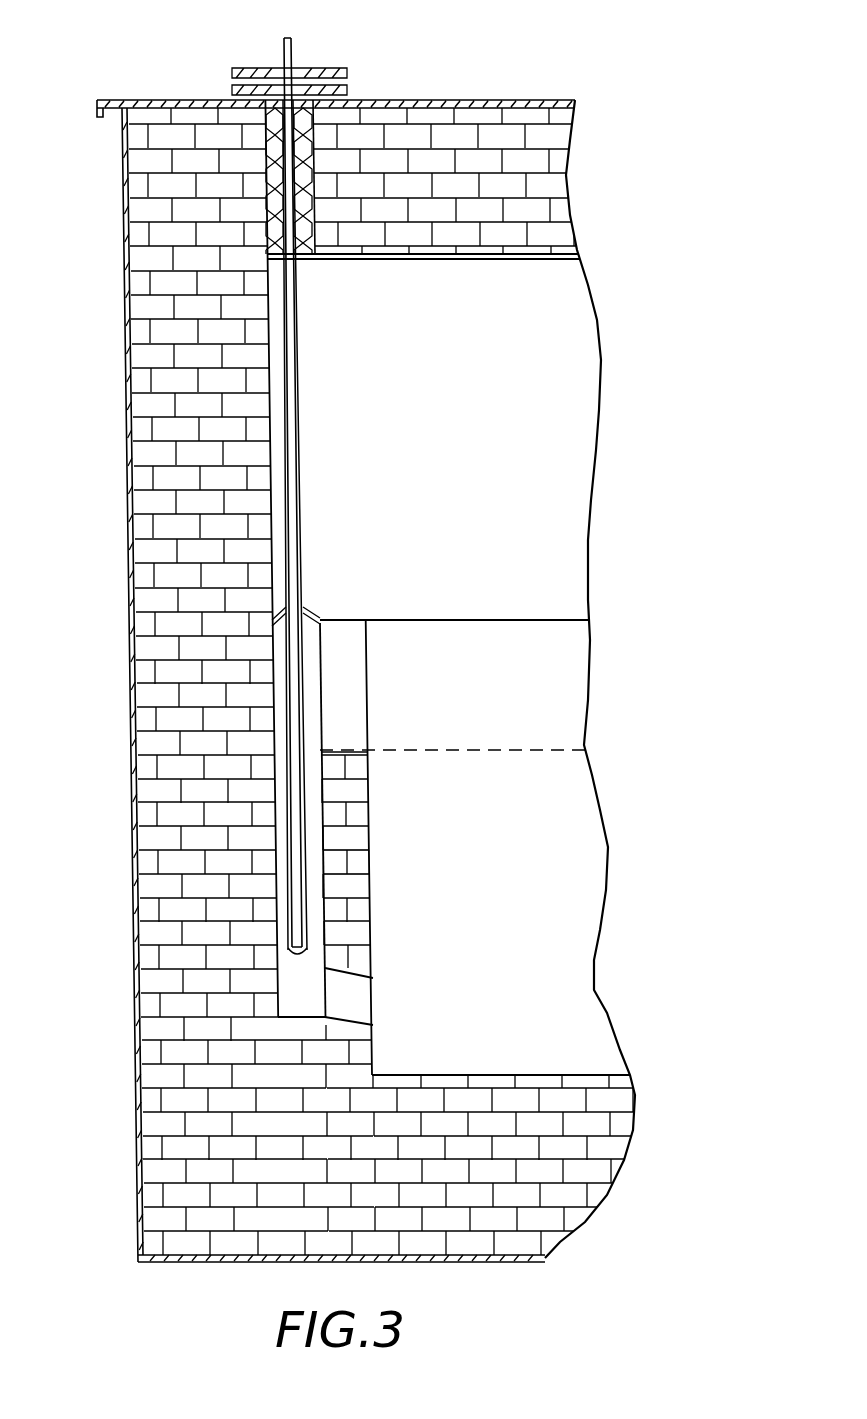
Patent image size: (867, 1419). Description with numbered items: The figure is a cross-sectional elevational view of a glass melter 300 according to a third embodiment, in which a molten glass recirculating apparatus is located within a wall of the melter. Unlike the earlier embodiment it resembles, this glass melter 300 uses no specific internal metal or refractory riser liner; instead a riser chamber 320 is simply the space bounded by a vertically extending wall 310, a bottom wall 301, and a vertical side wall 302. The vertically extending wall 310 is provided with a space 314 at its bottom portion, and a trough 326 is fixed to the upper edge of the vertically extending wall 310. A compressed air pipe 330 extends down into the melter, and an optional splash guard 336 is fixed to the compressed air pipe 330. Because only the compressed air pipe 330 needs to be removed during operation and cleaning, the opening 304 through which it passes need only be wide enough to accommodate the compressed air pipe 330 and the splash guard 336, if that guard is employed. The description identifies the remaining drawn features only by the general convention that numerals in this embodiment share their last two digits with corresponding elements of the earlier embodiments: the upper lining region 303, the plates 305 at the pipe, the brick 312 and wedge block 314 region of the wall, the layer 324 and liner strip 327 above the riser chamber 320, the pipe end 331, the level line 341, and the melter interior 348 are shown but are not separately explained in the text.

The glass melter 300 is at (653, 293).
The bottom wall 301 is at (573, 1073).
The vertical side wall 302 is at (158, 983).
The upper refractory lining 303 is at (522, 167).
The opening 304 is at (312, 164).
The rod 305 is at (323, 68).
The vertically extending wall 310 is at (373, 877).
The refractory brick 312 is at (358, 858).
The space 314 is at (358, 1002).
The riser chamber 320 is at (277, 827).
The layer 324 is at (342, 658).
The trough 326 is at (378, 737).
The channel liner 327 is at (357, 730).
The compressed air pipe 330 is at (284, 343).
The tube end 331 is at (287, 953).
The splash guard 336 is at (312, 617).
The level line 341 is at (468, 750).
The furnace chamber 348 is at (560, 923).